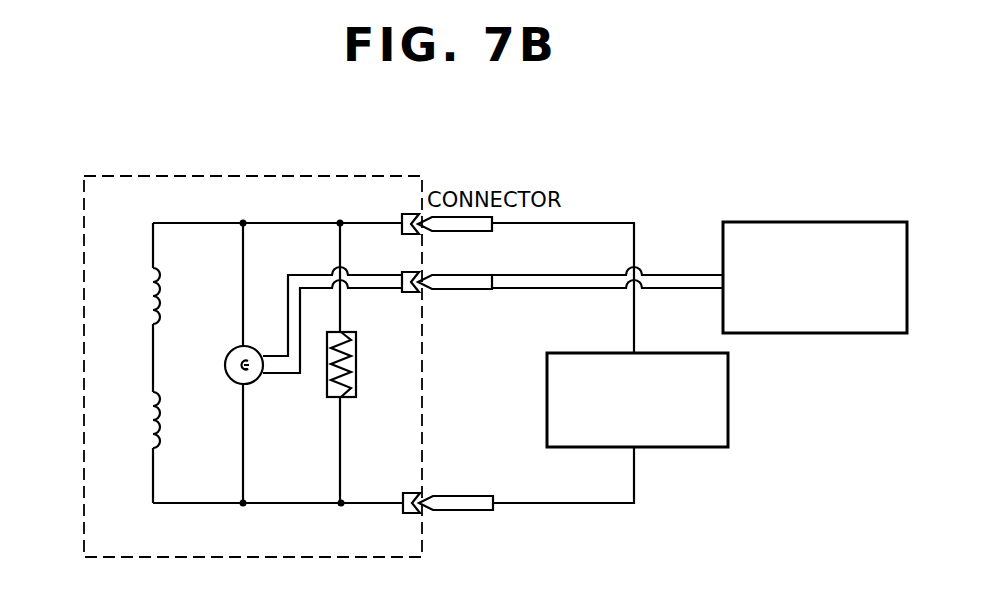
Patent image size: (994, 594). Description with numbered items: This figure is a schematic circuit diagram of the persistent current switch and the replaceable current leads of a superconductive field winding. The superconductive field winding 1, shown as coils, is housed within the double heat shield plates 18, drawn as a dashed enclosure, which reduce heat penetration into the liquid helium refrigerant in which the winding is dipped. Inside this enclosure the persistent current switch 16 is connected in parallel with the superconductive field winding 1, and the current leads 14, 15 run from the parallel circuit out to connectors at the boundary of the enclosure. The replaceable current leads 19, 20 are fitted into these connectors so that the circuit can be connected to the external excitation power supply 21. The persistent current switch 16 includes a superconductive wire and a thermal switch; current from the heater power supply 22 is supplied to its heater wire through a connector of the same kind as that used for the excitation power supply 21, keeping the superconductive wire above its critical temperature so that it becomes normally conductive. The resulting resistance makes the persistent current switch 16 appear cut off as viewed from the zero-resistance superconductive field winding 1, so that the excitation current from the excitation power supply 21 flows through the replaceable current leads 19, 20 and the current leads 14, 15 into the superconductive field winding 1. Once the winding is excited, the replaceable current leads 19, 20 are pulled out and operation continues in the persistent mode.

The superconductive field winding 1 is at (147, 310).
The current lead 14 is at (360, 222).
The current lead 15 is at (365, 505).
The persistent current switch 16 is at (230, 352).
The double heat shield plates 18 is at (155, 176).
The replaceable current lead 19 is at (572, 222).
The replaceable current lead 20 is at (580, 505).
The excitation power supply 21 is at (576, 353).
The heater power supply 22 is at (808, 222).